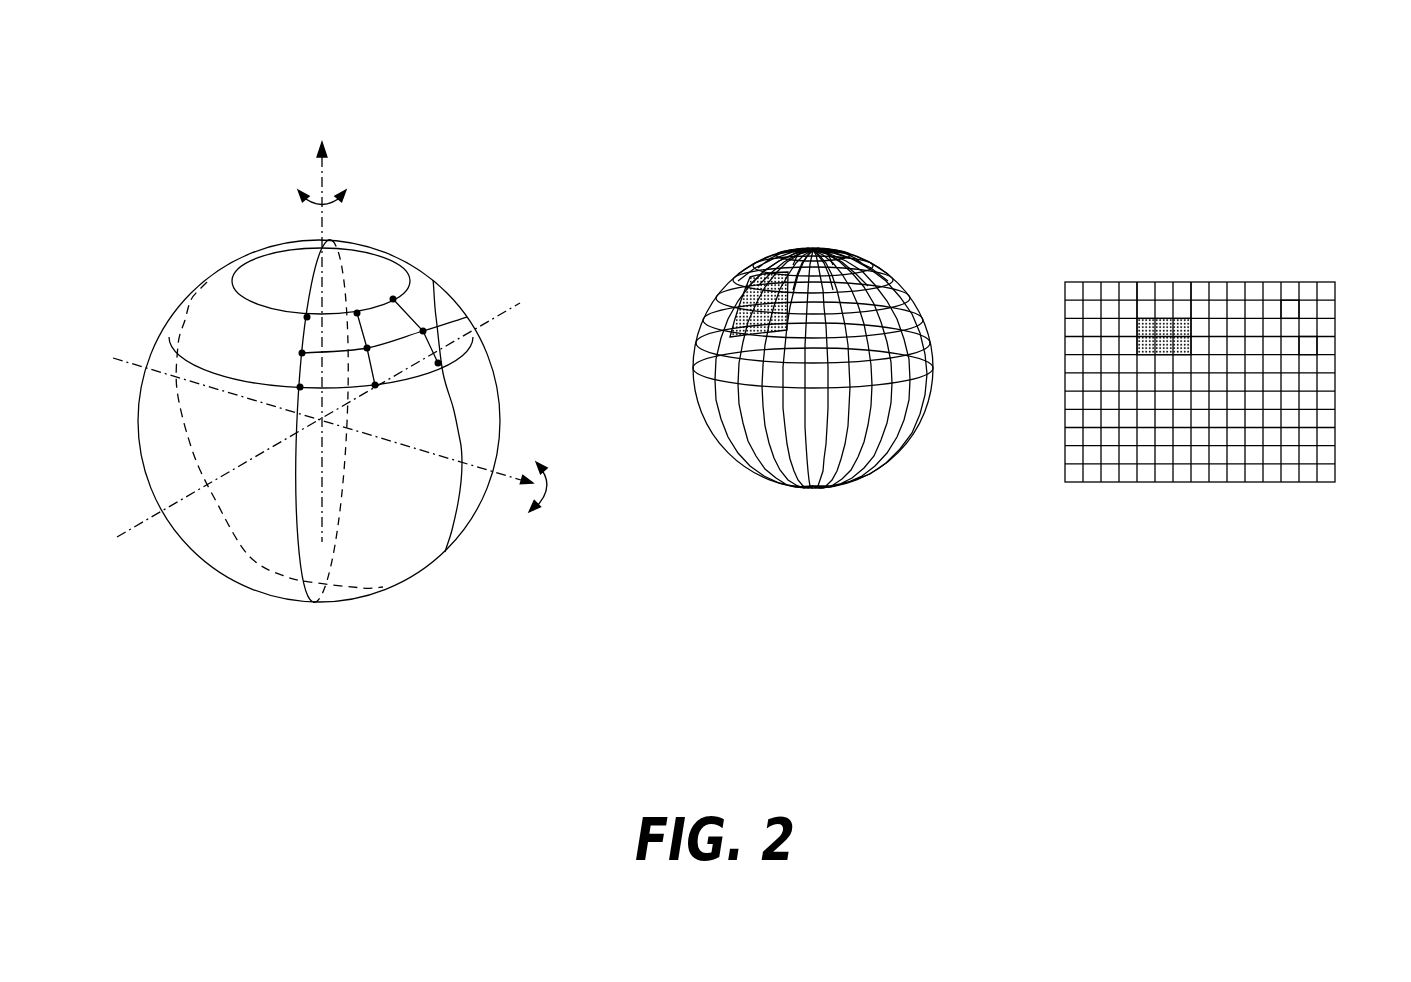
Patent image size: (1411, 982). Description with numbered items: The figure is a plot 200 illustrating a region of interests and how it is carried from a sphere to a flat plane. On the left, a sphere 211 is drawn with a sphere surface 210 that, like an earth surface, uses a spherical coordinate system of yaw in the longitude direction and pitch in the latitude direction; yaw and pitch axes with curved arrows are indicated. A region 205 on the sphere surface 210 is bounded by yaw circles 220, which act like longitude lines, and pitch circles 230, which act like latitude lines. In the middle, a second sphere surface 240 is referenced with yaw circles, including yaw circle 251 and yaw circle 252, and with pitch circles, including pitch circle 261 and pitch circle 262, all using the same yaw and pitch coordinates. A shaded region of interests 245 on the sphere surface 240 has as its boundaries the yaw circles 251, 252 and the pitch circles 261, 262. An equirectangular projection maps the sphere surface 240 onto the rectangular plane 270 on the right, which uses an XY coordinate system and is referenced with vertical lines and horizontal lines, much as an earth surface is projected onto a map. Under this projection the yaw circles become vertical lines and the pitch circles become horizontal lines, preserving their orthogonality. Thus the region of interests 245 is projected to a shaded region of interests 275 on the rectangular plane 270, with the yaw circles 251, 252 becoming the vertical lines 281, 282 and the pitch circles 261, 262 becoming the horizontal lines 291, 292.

The plot 200 is at (1300, 126).
The region 205 is at (433, 280).
The sphere surface 210 is at (381, 249).
The sphere 211 is at (442, 134).
The yaw circles 220 is at (313, 305).
The pitch circles 230 is at (418, 368).
The sphere surface 240 is at (878, 222).
The region of interests 245 is at (736, 298).
The yaw circle 251 is at (757, 258).
The yaw circle 252 is at (829, 250).
The pitch circle 261 is at (903, 283).
The pitch circle 262 is at (697, 360).
The rectangular plane 270 is at (1322, 245).
The region of interests 275 is at (1152, 330).
The vertical line 281 is at (1140, 302).
The vertical line 282 is at (1192, 293).
The horizontal line 291 is at (1292, 316).
The horizontal line 292 is at (1300, 352).